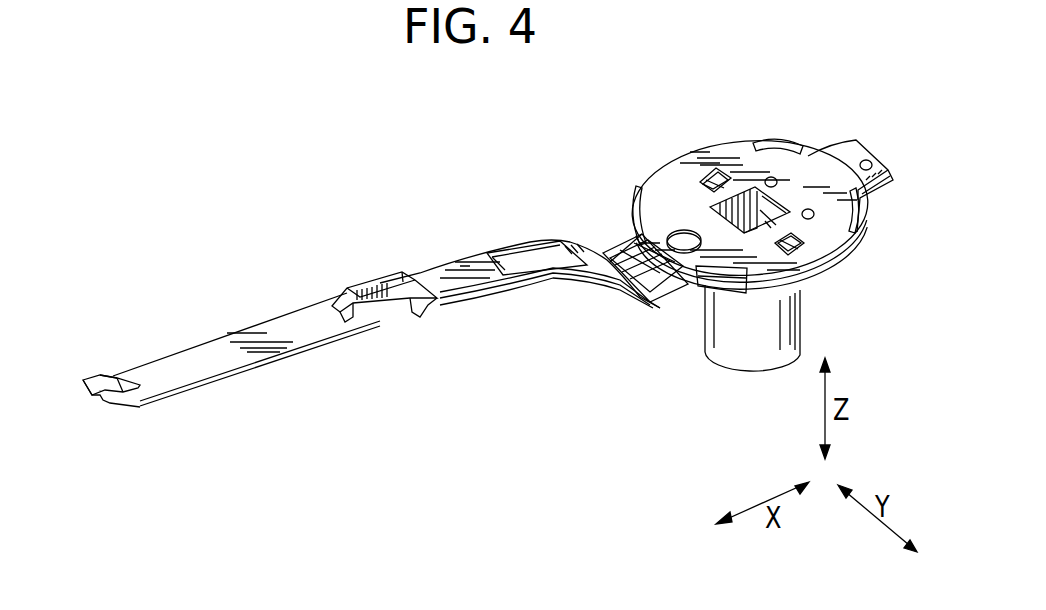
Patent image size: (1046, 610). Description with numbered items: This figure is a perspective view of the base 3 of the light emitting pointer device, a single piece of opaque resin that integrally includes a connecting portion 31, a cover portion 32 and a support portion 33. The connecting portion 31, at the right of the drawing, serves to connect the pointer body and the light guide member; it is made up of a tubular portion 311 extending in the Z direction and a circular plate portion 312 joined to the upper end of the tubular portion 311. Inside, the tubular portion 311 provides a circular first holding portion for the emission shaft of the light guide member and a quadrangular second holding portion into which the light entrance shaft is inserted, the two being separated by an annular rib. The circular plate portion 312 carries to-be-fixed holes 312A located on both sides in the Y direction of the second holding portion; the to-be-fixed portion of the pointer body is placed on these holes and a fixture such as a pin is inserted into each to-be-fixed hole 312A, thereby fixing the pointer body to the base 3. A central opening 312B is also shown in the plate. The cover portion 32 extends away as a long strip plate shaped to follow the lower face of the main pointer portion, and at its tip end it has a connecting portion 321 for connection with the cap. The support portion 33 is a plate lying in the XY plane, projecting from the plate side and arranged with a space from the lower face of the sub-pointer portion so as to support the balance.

The base 3 is at (517, 198).
The connecting portion 31 is at (745, 344).
The tubular portion 311 is at (782, 316).
The circular plate portion 312 is at (742, 150).
The to-be-fixed hole 312A is at (699, 175).
The center opening 312B is at (777, 207).
The support portion 33 is at (860, 152).
The cover portion 32 is at (470, 285).
The connecting portion 321 is at (93, 382).